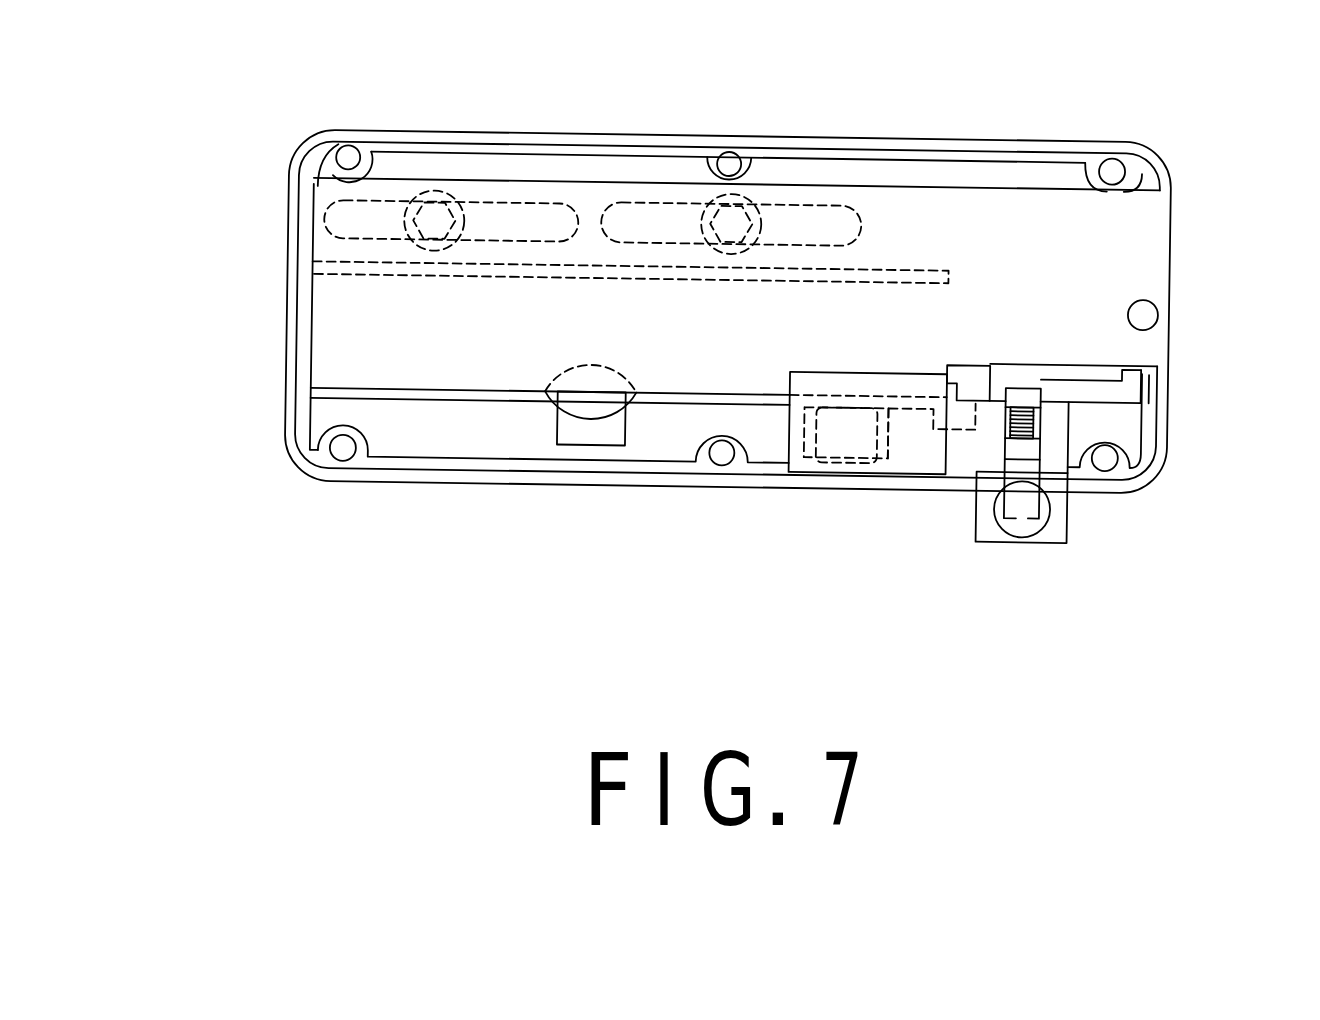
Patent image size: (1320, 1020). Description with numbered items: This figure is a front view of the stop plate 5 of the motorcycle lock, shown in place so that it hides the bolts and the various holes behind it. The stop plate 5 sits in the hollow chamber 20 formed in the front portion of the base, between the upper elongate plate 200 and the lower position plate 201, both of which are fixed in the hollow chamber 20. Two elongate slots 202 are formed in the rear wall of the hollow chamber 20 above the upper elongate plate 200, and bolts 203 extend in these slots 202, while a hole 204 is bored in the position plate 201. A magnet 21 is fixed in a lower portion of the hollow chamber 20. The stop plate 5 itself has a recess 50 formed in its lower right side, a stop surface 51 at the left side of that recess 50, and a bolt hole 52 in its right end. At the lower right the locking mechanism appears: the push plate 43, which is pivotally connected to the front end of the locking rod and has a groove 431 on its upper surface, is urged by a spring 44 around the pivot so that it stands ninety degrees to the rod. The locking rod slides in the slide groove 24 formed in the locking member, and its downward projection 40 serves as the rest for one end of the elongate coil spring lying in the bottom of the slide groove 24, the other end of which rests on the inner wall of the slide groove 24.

The stop plate 5 is at (1023, 212).
The hollow chamber 20 is at (410, 445).
The upper elongate plate 200 is at (360, 270).
The lower position plate 201 is at (487, 397).
The elongate slots 202 is at (530, 200).
The bolts 203 is at (437, 207).
The hole 204 is at (590, 433).
The push plate 43 is at (788, 432).
The magnet 21 is at (852, 450).
The groove 431 is at (947, 367).
The stop surface 51 is at (973, 390).
The recess 50 is at (1073, 364).
The spring 44 is at (1016, 427).
The slide groove 24 is at (1040, 431).
The downward projection 40 is at (1022, 493).
The bolt hole 52 is at (1147, 314).